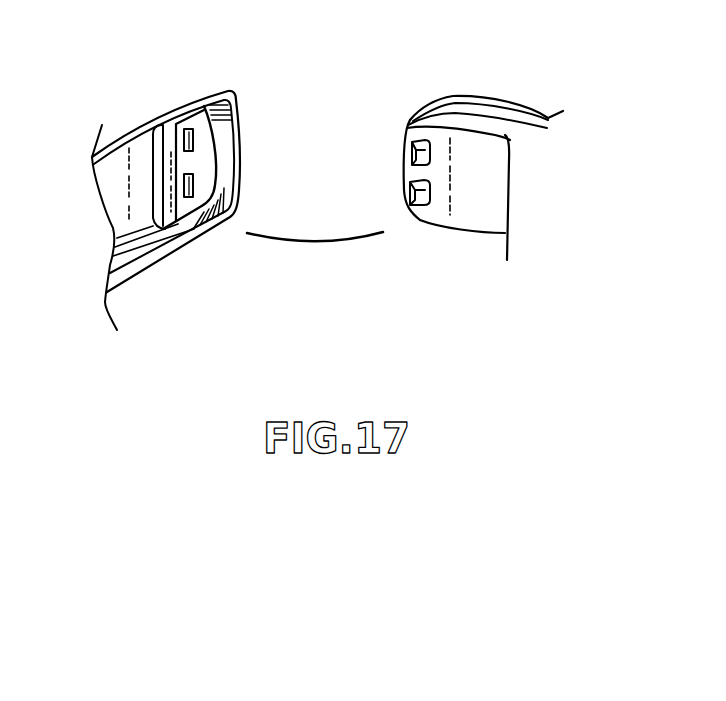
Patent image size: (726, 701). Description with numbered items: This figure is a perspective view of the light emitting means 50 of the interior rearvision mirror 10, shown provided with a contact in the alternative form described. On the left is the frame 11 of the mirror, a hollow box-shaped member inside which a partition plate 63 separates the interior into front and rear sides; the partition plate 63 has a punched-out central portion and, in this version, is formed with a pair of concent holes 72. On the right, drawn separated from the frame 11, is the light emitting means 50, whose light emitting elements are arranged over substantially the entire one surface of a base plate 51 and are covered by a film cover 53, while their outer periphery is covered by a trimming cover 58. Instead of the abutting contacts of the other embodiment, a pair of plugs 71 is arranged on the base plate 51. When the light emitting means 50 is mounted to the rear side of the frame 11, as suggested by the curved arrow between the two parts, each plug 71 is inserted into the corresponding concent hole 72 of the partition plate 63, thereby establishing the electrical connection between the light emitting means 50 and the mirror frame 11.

The interior rearvision mirror 10 is at (418, 268).
The frame 11 is at (93, 158).
The light emitting means 50 is at (504, 171).
The base plate 51 is at (478, 221).
The film cover 53 is at (506, 108).
The trimming cover 58 is at (517, 121).
The partition plate 63 is at (188, 223).
The plug 71 is at (407, 145).
The concent hole 72 is at (194, 185).